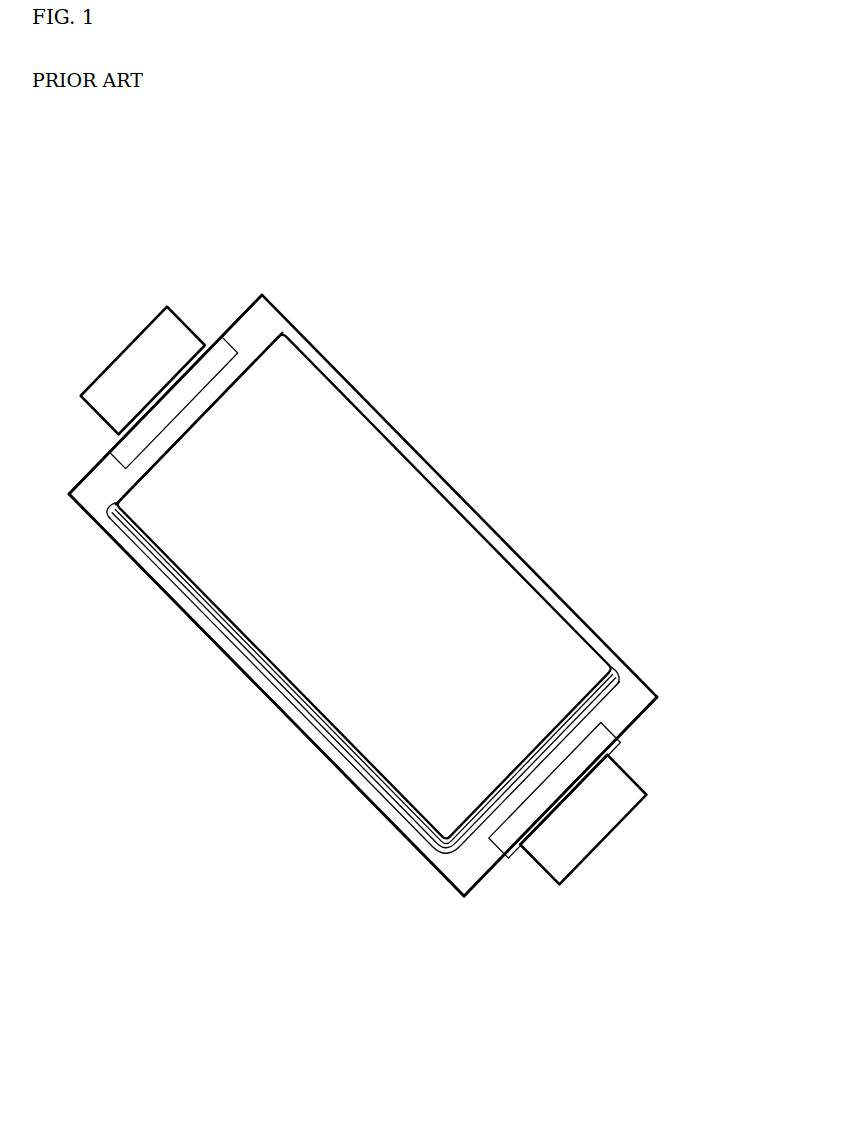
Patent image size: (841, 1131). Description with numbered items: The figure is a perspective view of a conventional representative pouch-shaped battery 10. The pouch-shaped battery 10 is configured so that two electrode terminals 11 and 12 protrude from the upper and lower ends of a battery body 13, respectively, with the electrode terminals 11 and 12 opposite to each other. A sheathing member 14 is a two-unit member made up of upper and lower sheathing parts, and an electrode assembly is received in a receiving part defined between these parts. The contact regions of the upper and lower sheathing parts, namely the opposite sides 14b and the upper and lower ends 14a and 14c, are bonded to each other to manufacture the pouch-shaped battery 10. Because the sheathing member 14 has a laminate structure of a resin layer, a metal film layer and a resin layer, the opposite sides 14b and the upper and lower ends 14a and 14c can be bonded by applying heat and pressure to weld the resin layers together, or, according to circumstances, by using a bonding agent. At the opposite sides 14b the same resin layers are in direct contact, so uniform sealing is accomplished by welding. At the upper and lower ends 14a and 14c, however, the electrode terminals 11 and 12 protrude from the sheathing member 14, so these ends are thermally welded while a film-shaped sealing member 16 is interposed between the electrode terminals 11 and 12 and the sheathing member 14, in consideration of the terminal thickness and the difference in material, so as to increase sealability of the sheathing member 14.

The pouch-shaped battery 10 is at (81, 164).
The electrode terminal 11 is at (138, 358).
The electrode terminal 12 is at (605, 838).
The battery body 13 is at (440, 513).
The sheathing member 14 is at (642, 682).
The upper end 14a is at (263, 318).
The opposite sides 14b is at (360, 781).
The lower end 14c is at (477, 860).
The film-shaped sealing member 16 is at (620, 743).